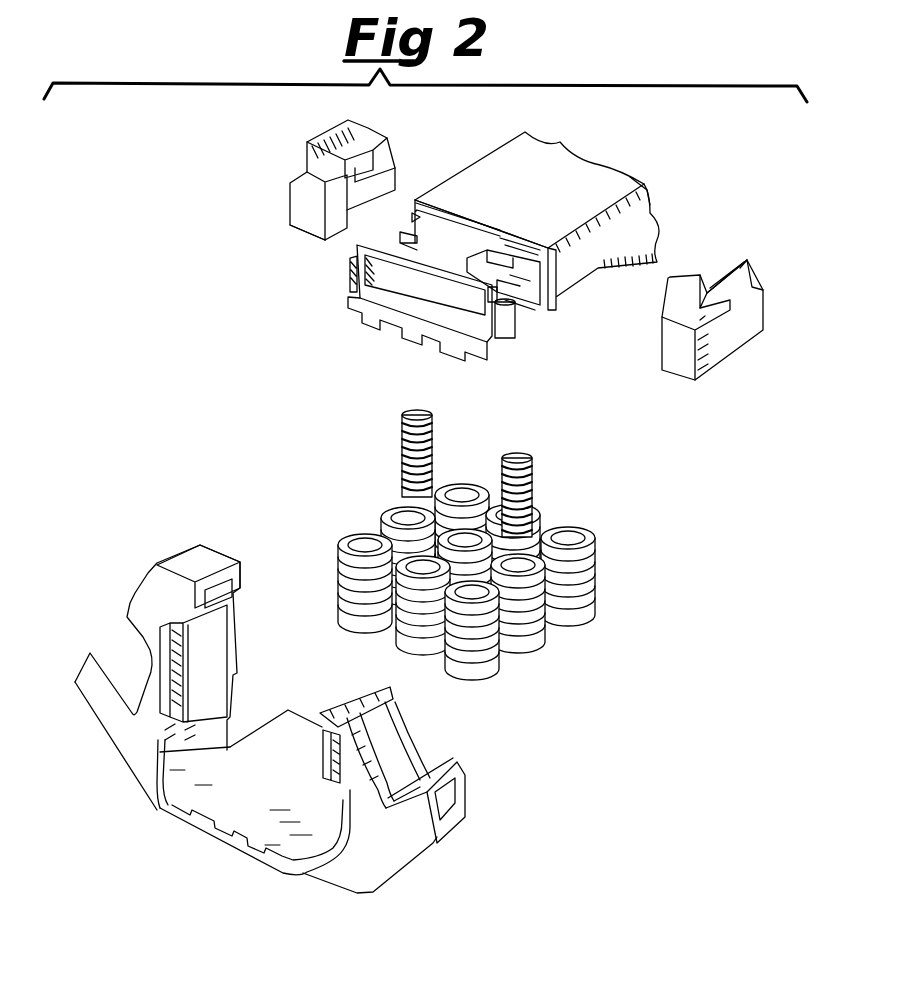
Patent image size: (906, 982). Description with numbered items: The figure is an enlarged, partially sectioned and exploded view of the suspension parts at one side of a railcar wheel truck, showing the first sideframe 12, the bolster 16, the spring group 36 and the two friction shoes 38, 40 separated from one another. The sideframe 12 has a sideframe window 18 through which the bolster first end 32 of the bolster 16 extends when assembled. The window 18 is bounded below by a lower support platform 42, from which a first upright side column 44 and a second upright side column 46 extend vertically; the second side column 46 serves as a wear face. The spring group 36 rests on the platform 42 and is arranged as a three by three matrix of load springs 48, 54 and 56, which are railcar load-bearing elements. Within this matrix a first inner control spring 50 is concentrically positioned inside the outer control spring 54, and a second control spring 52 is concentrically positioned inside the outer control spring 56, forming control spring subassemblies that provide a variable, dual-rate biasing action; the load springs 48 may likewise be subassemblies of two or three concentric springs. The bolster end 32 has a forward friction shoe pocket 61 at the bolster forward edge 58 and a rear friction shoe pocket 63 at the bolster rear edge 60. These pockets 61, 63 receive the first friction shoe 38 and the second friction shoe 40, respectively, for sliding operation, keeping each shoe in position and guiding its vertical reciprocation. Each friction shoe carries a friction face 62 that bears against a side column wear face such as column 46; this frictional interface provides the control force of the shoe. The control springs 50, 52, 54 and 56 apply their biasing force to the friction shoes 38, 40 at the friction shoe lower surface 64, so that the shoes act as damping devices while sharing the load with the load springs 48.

The first sideframe 12 is at (100, 747).
The bolster 16 is at (568, 172).
The sideframe window 18 is at (255, 700).
The bolster first end 32 is at (346, 273).
The spring group 36 is at (512, 562).
The first friction shoe 38 is at (280, 196).
The second friction shoe 40 is at (742, 346).
The lower support platform 42 is at (296, 722).
The first upright side column 44 is at (215, 650).
The second upright side column 46 is at (320, 725).
The load springs 48 is at (479, 569).
The first inner control spring 50 is at (398, 435).
The second control spring 52 is at (536, 470).
The outer control spring 54 is at (398, 505).
The outer control spring 56 is at (546, 628).
The bolster forward edge 58 is at (475, 165).
The bolster rear edge 60 is at (648, 197).
The forward friction shoe pocket 61 is at (402, 230).
The friction face 62 is at (750, 283).
The rear friction shoe pocket 63 is at (520, 318).
The friction shoe lower surface 64 is at (303, 229).